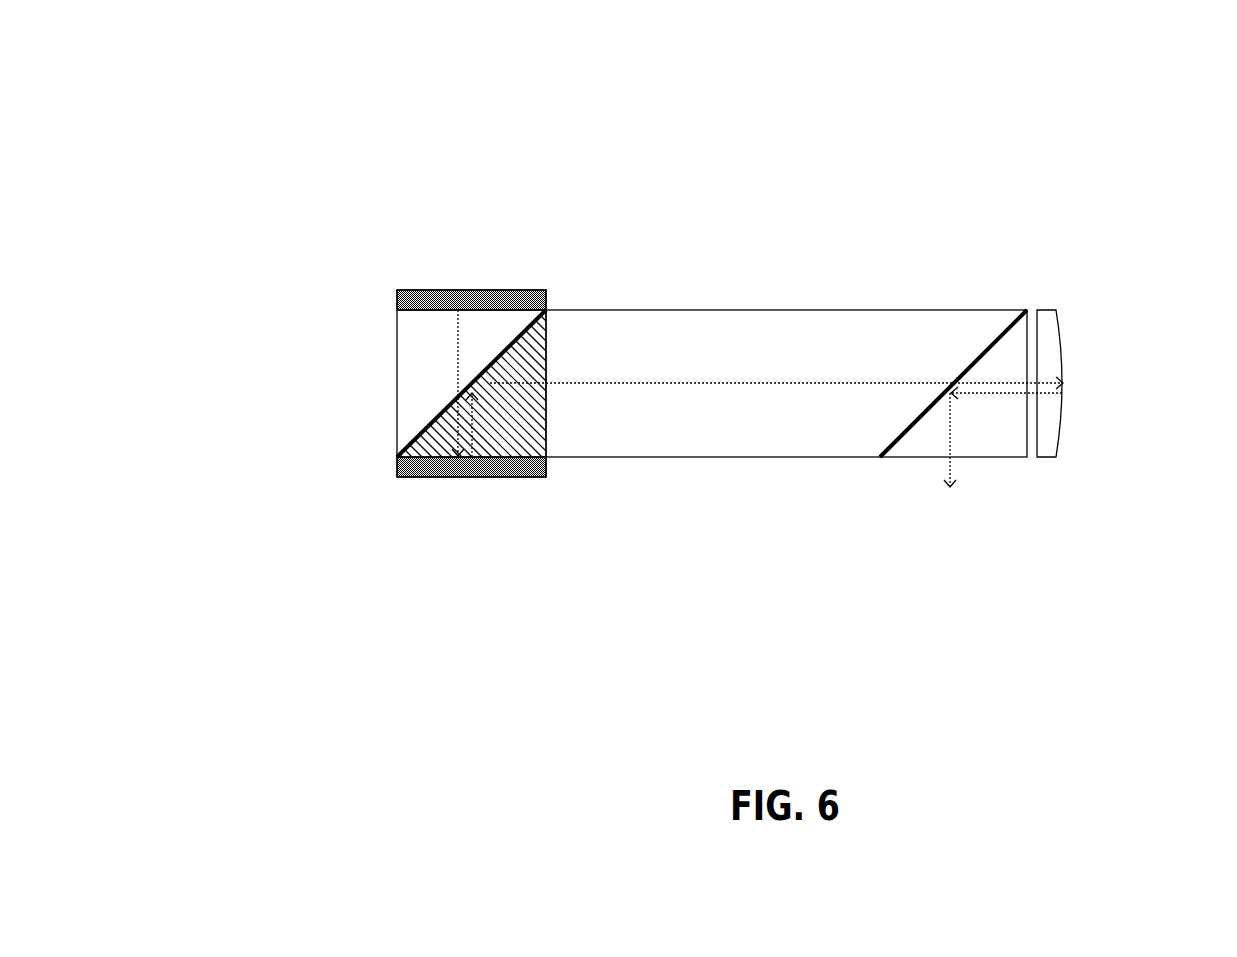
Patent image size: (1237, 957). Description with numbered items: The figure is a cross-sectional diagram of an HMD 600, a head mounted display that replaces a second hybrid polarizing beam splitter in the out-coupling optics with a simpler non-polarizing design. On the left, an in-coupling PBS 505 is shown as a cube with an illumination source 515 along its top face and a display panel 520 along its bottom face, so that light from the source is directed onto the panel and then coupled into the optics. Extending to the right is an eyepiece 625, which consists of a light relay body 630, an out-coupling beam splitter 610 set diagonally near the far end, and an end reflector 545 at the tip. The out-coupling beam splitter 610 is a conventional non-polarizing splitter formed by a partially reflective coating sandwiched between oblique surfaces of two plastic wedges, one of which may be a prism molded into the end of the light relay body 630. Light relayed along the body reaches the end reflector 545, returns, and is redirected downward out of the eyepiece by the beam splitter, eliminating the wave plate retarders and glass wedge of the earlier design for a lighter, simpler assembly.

The HMD 600 is at (288, 79).
The in-coupling PBS 505 is at (352, 350).
The illumination source 515 is at (448, 290).
The display panel 520 is at (398, 466).
The eyepiece 625 is at (1069, 272).
The light relay body 630 is at (1033, 610).
The out-coupling beam splitter 610 is at (1028, 483).
The end reflector 545 is at (1065, 415).